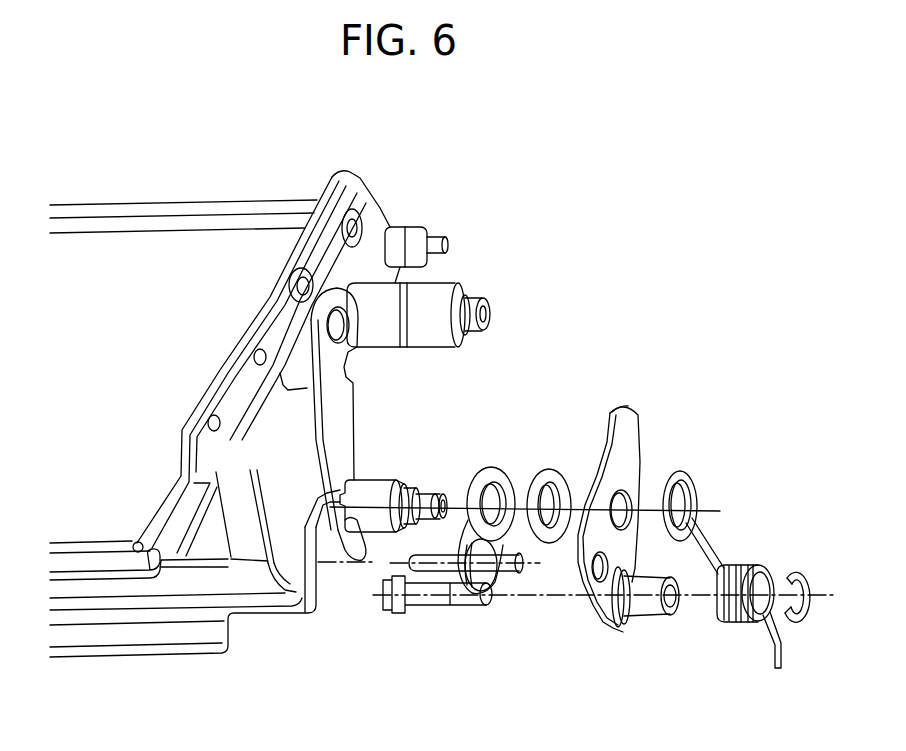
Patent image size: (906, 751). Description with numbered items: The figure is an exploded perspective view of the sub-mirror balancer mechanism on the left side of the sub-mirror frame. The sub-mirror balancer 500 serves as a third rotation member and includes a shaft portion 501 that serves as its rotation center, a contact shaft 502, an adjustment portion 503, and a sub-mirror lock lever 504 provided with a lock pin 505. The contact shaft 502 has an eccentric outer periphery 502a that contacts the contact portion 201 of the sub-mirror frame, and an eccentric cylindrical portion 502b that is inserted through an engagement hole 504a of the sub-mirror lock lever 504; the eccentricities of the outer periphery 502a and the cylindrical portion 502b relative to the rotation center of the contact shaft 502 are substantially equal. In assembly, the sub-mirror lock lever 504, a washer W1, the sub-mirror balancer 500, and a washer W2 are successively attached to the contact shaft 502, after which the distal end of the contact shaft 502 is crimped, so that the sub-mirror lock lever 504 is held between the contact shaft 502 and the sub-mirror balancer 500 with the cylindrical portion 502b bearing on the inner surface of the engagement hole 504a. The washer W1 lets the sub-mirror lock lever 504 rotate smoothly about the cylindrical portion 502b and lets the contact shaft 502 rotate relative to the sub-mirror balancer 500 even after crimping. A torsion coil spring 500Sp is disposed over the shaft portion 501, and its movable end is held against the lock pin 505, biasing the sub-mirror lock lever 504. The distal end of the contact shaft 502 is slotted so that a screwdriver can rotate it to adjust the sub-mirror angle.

The contact portion 201 is at (343, 567).
The contact shaft 502 is at (394, 477).
The outer periphery 502a is at (381, 520).
The cylindrical portion 502b is at (407, 484).
The sub-mirror lock lever 504 is at (503, 493).
The engagement hole 504a is at (520, 470).
The washer W1 is at (551, 540).
The lock pin 505 is at (433, 568).
The adjustment portion 503 is at (617, 407).
The sub-mirror balancer 500 is at (634, 513).
The shaft portion 501 is at (642, 603).
The washer W2 is at (680, 477).
The torsion coil spring 500Sp is at (757, 567).